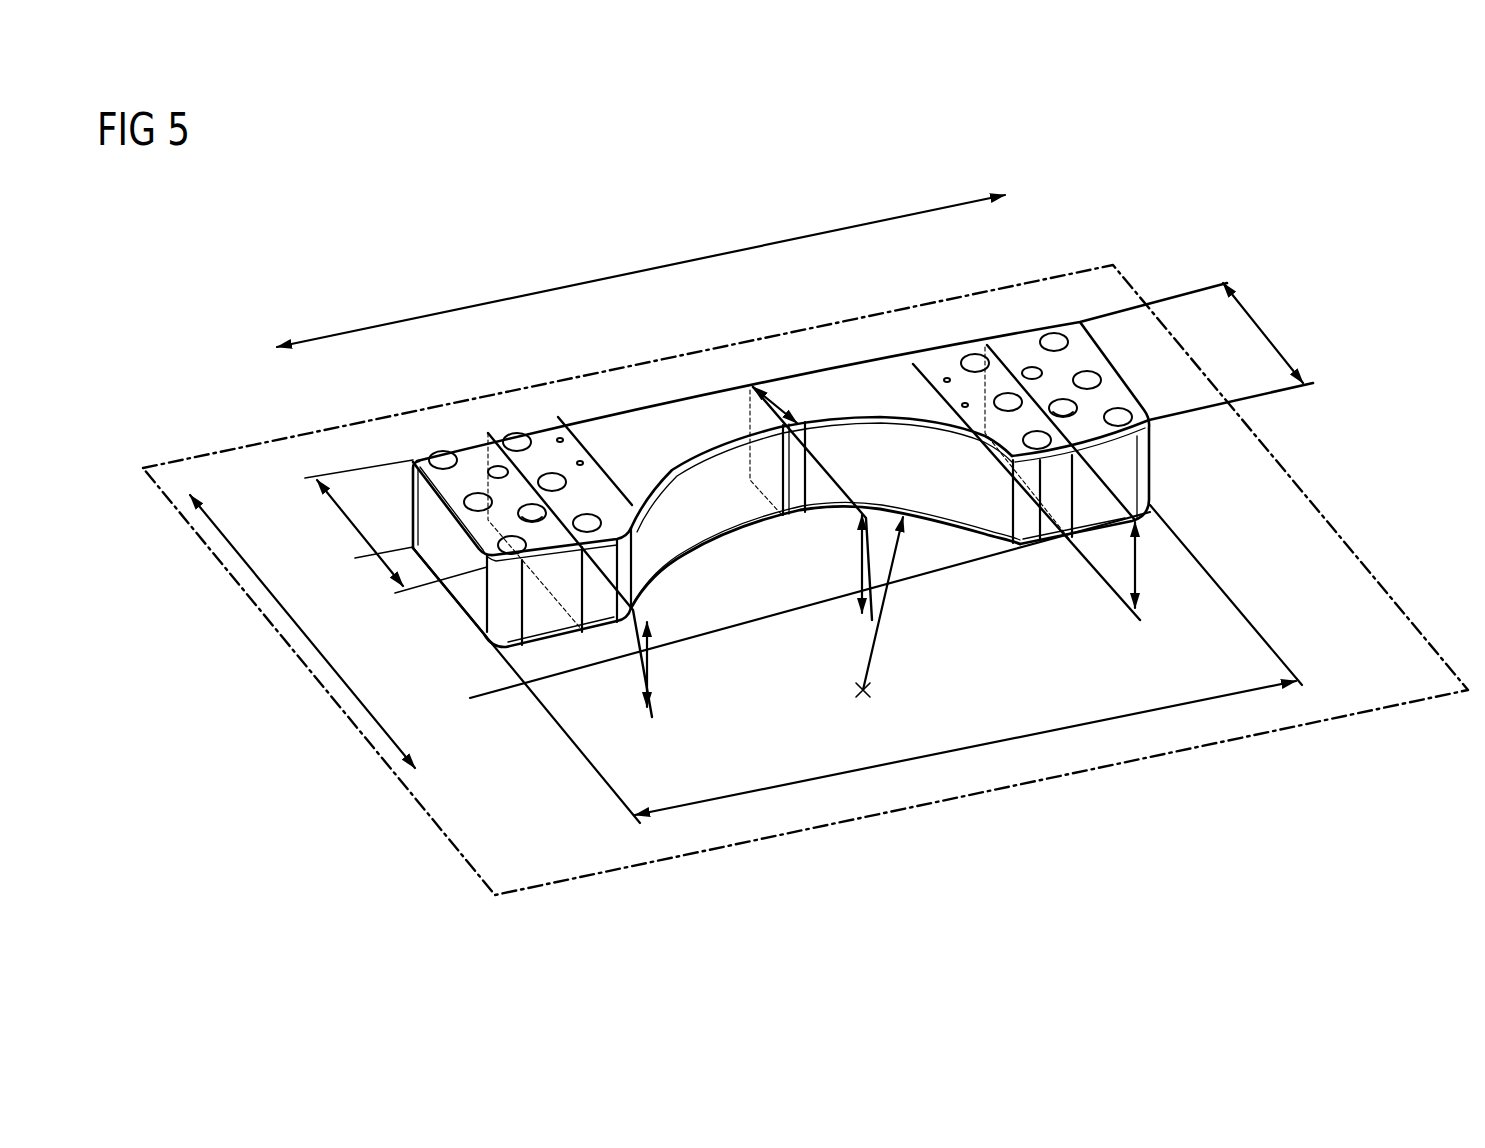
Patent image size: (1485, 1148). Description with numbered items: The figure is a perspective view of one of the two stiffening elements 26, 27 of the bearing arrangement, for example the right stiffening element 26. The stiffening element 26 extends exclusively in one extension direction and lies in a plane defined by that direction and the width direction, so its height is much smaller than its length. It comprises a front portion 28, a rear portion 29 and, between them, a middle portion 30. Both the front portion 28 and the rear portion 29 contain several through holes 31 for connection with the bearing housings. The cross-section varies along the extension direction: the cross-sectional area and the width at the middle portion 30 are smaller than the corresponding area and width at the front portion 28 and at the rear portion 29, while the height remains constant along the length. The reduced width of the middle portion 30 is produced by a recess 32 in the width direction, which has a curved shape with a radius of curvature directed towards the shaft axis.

The stiffening element 26 is at (855, 421).
The stiffening element 27 is at (855, 465).
The front portion 28 is at (1097, 348).
The rear portion 29 is at (495, 428).
The middle portion 30 is at (825, 463).
The through holes 31 is at (443, 458).
The recess 32 is at (710, 570).